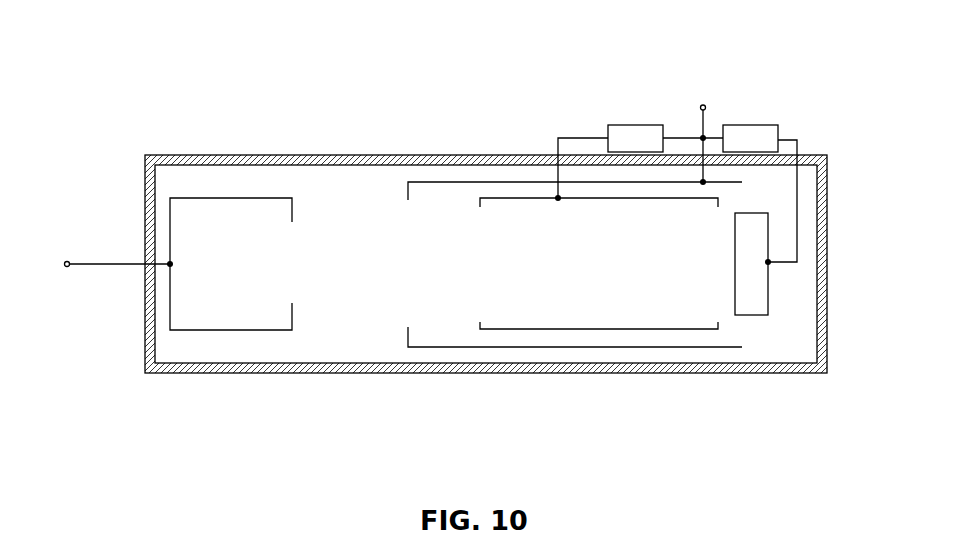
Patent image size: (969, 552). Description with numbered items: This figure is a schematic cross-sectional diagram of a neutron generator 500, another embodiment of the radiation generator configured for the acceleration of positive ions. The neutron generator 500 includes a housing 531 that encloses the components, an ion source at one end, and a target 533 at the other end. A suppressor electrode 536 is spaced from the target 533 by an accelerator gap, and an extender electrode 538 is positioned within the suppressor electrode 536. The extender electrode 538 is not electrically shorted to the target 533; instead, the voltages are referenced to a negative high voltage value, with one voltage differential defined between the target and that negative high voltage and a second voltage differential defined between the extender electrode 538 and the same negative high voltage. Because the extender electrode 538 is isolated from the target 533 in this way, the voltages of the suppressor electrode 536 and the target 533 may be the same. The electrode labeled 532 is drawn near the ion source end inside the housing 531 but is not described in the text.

The neutron generator 500 is at (147, 67).
The housing 531 is at (336, 368).
The repeller electrode 532 is at (215, 320).
The target 533 is at (753, 315).
The suppressor electrode 536 is at (440, 182).
The extender electrode 538 is at (559, 329).